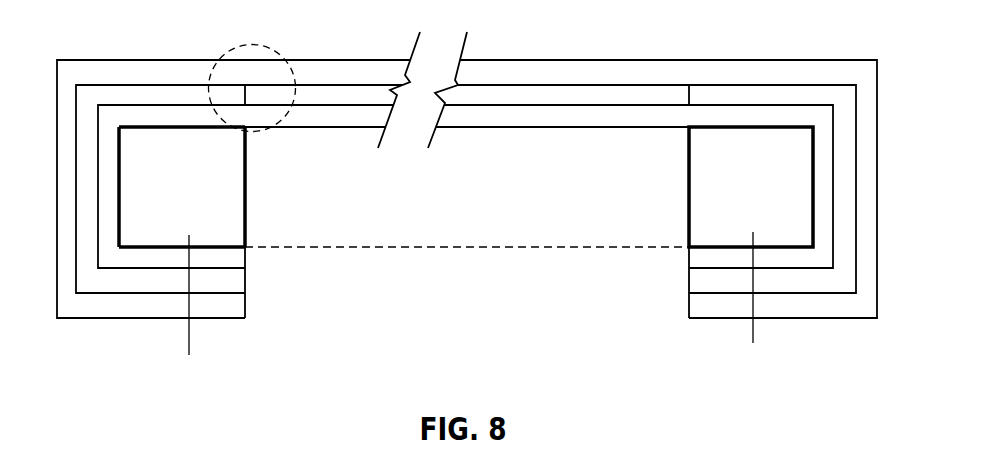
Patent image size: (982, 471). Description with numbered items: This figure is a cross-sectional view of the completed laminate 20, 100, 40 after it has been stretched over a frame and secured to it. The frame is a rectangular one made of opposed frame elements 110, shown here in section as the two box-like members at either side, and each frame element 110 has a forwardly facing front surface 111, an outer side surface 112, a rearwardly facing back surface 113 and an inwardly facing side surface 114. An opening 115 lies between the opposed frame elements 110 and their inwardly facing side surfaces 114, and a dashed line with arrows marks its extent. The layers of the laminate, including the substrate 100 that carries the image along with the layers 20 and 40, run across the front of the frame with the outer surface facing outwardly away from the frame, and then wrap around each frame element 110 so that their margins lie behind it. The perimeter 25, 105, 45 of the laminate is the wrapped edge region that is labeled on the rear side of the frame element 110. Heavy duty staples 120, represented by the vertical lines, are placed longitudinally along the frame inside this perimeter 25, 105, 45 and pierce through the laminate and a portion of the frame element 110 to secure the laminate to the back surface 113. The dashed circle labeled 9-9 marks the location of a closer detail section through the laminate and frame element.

The laminate layer 20 is at (573, 72).
The laminate perimeter portion 25 is at (257, 305).
The laminate layer 40 is at (655, 117).
The laminate perimeter portion 45 is at (256, 256).
The substrate 100 is at (615, 92).
The laminate perimeter portion 105 is at (257, 281).
The frame element 110 is at (466, 187).
The front surface 111 is at (191, 129).
The outer side surface 112 is at (121, 187).
The back surface 113 is at (170, 246).
The inwardly facing side surface 114 is at (243, 181).
The opening 115 is at (356, 188).
The staples 120 is at (177, 330).
The section line 9-9 is at (283, 57).